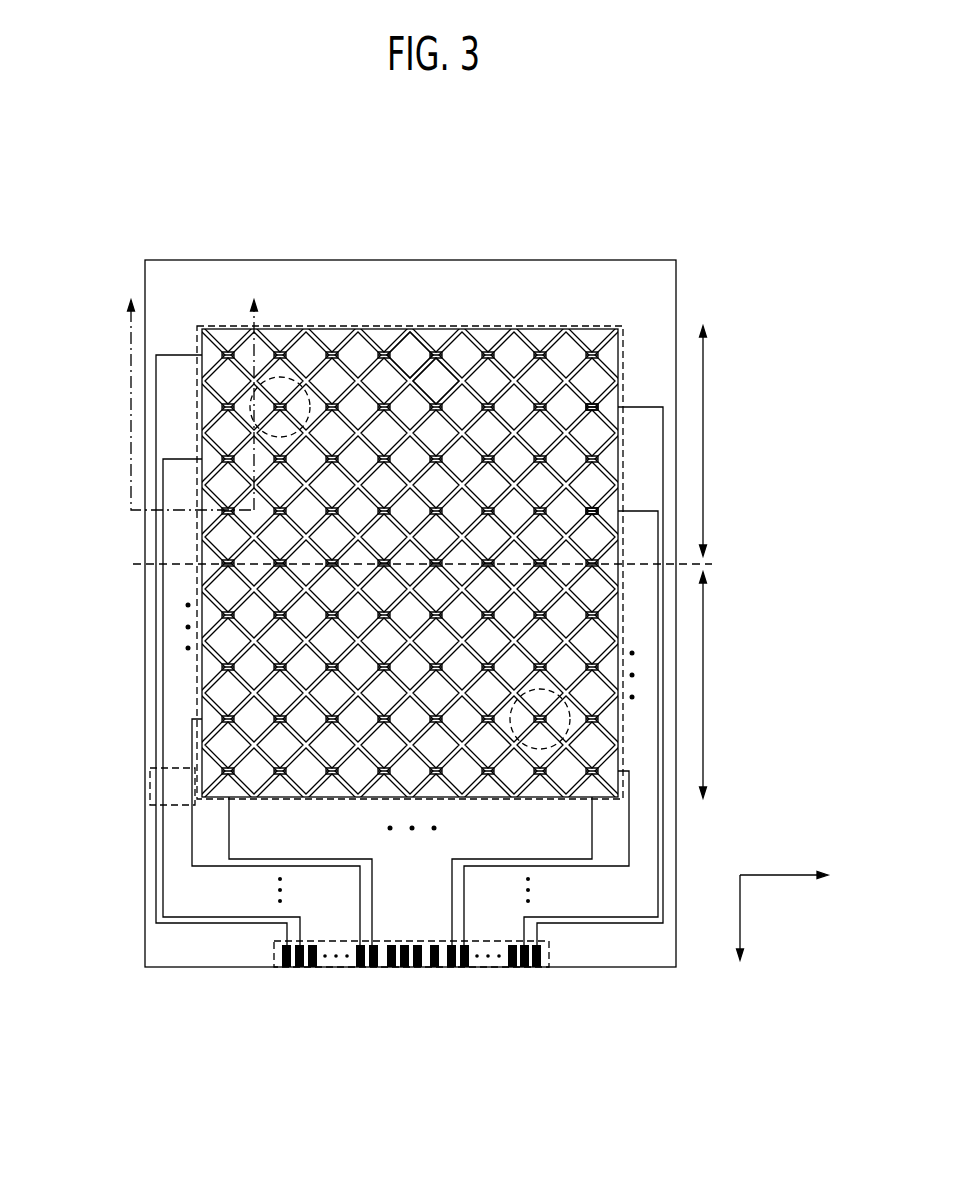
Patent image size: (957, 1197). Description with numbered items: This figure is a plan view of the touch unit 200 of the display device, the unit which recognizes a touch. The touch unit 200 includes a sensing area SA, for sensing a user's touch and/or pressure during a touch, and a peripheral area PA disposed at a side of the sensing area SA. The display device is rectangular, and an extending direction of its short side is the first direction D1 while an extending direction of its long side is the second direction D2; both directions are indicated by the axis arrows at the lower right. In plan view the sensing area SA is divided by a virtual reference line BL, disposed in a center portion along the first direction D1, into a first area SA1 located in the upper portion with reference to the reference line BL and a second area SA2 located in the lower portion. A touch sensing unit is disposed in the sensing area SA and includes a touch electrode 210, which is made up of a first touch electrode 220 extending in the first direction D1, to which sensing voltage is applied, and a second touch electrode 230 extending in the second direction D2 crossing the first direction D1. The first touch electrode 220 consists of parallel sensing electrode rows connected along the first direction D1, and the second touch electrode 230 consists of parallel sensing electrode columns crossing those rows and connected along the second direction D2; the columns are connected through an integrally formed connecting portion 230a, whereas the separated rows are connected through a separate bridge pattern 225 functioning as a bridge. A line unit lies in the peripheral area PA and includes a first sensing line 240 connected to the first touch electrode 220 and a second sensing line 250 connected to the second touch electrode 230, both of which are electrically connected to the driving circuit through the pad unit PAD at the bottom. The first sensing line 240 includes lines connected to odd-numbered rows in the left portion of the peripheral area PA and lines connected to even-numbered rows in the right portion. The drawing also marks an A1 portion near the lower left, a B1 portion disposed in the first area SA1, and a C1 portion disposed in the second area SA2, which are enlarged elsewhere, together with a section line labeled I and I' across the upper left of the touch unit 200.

The touch unit 200 is at (656, 259).
The touch electrode 210 is at (485, 216).
The first touch electrode 220 is at (407, 347).
The second touch electrode 230 is at (440, 377).
The bridge pattern 225 is at (598, 392).
The connecting portion 230a is at (598, 506).
The first sensing line 240 is at (152, 859).
The second sensing line 250 is at (245, 860).
The pad unit PAD is at (410, 990).
The sensing area SA is at (580, 320).
The first area SA1 is at (719, 441).
The second area SA2 is at (719, 685).
The peripheral area PA is at (160, 336).
The reference line BL is at (408, 565).
The A1 portion A1 is at (150, 790).
The B1 portion B1 is at (250, 417).
The C1 portion C1 is at (578, 698).
The section line I is at (187, 392).
The section line I' is at (260, 392).
The first direction D1 is at (798, 877).
The second direction D2 is at (739, 936).